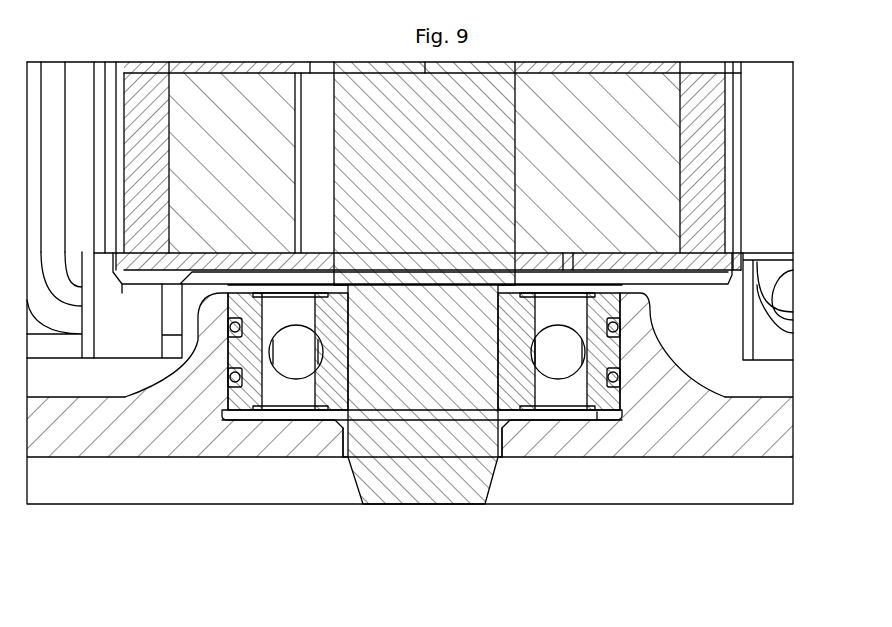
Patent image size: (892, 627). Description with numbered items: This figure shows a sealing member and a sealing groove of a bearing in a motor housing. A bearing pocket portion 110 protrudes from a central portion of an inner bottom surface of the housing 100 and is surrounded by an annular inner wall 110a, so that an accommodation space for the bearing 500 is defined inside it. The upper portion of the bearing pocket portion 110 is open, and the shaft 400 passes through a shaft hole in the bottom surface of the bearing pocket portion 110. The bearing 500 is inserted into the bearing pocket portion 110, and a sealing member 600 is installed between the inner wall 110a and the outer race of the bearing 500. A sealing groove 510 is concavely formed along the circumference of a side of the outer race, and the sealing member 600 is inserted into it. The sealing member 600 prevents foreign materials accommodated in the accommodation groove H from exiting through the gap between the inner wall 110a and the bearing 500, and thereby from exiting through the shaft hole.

The housing 100 is at (725, 460).
The bearing pocket portion 110 is at (645, 365).
The inner wall 110a is at (630, 410).
The shaft 400 is at (390, 393).
The bearing 500 is at (572, 418).
The sealing groove 510 is at (628, 287).
The sealing member 600 is at (622, 327).
The accommodation groove H is at (597, 424).